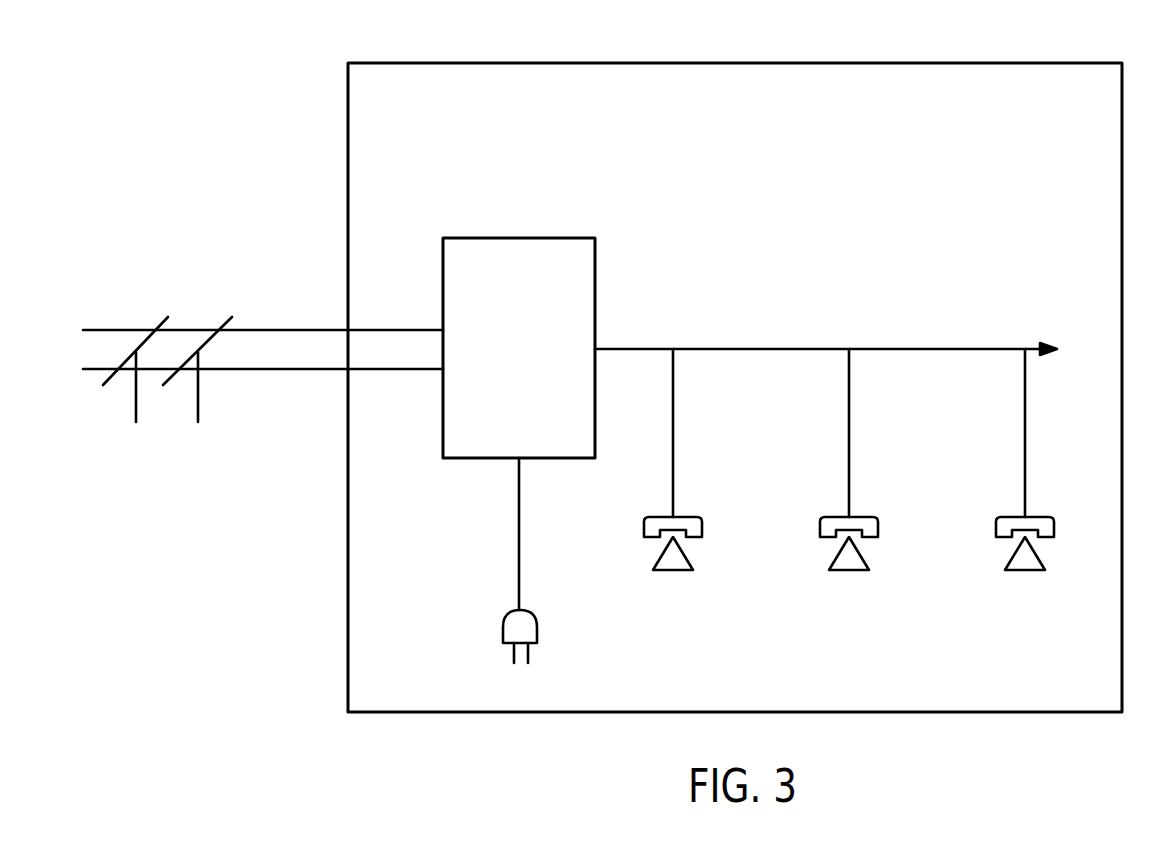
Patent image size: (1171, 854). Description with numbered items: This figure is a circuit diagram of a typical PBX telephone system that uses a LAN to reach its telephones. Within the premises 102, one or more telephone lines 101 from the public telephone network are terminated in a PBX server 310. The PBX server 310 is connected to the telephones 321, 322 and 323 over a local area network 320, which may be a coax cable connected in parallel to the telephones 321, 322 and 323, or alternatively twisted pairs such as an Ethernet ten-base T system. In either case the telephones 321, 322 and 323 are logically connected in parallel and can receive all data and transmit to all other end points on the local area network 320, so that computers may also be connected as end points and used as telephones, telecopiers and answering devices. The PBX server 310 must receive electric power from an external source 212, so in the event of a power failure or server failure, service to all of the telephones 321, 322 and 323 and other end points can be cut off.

The telephone lines 101 is at (108, 330).
The premises 102 is at (883, 62).
The power source 212 is at (503, 622).
The PBX server 310 is at (540, 237).
The local area network 320 is at (735, 348).
The telephone 321 is at (672, 572).
The telephone 322 is at (848, 572).
The telephone 323 is at (1024, 572).